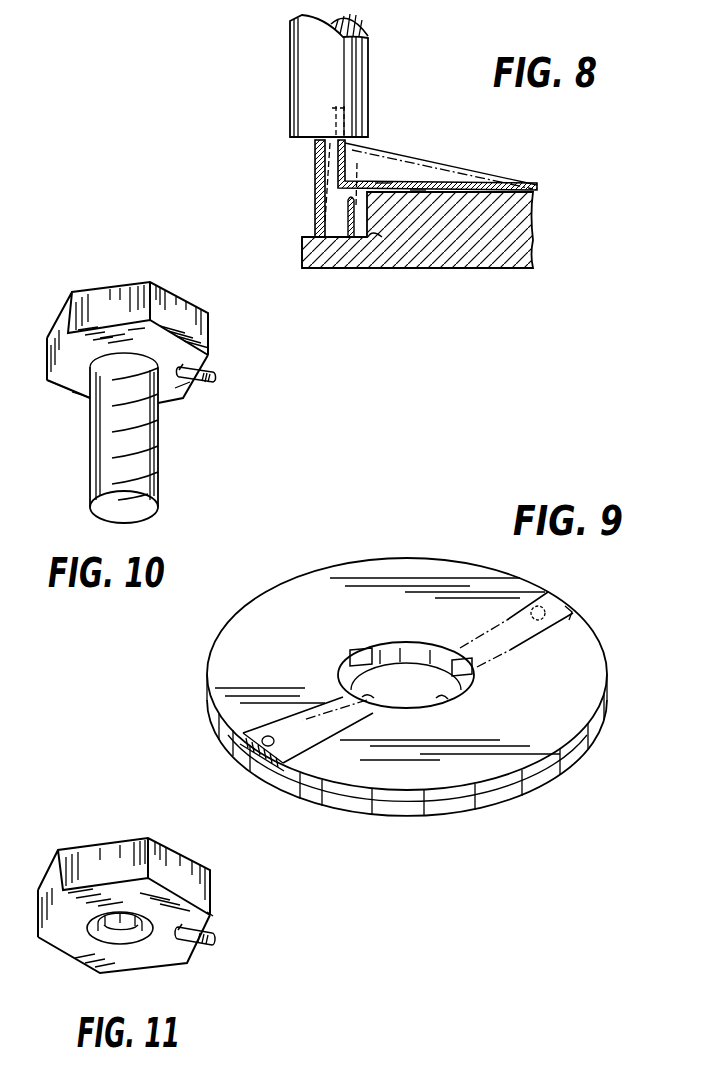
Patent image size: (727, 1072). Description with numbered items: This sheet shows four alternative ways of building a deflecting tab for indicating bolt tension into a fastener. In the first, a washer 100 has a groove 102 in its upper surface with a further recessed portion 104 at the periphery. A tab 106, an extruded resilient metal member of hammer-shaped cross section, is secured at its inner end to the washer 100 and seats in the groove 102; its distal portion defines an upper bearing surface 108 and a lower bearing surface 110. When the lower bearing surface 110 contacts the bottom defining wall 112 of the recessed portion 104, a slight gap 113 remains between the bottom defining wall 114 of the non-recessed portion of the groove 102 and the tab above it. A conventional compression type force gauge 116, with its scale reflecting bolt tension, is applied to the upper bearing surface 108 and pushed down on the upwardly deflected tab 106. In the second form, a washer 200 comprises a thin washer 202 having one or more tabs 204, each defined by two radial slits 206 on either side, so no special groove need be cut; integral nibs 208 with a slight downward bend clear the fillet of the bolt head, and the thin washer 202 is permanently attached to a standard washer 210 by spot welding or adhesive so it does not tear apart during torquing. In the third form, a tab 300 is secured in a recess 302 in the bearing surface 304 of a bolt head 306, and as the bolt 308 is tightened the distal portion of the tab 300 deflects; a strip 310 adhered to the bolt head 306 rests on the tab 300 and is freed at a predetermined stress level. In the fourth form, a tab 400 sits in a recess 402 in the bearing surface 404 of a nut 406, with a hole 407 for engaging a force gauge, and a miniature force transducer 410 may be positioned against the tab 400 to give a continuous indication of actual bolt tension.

In FIG. 8, the washer 100 is at (527, 240).
In FIG. 8, the groove 102 is at (383, 183).
In FIG. 8, the recessed portion 104 is at (318, 228).
In FIG. 8, the tab 106 is at (471, 178).
In FIG. 8, the upper bearing surface 108 is at (317, 139).
In FIG. 8, the lower bearing surface 110 is at (305, 236).
In FIG. 8, the bottom defining wall of the recessed portion 112 is at (378, 240).
In FIG. 8, the gap 113 is at (433, 194).
In FIG. 8, the bottom defining wall of the non-recessed portion 114 is at (418, 190).
In FIG. 8, the force gauge 116 is at (288, 109).
In FIG. 9, the washer 200 is at (445, 711).
In FIG. 9, the thin washer 202 is at (413, 792).
In FIG. 9, the tab 204 is at (548, 596).
In FIG. 9, the radial slit 206 is at (503, 627).
In FIG. 9, the nib 208 is at (406, 675).
In FIG. 9, the standard washer 210 is at (506, 792).
In FIG. 10, the tab 300 is at (150, 388).
In FIG. 10, the recess 302 is at (200, 358).
In FIG. 10, the bearing surface 304 is at (70, 372).
In FIG. 10, the bolt head 306 is at (147, 283).
In FIG. 10, the bolt 308 is at (90, 470).
In FIG. 10, the strip 310 is at (215, 368).
In FIG. 11, the tab 400 is at (182, 890).
In FIG. 11, the recess 402 is at (222, 918).
In FIG. 11, the bearing surface 404 is at (103, 928).
In FIG. 11, the nut 406 is at (112, 845).
In FIG. 11, the hole 407 is at (220, 936).
In FIG. 11, the force transducer 410 is at (212, 913).